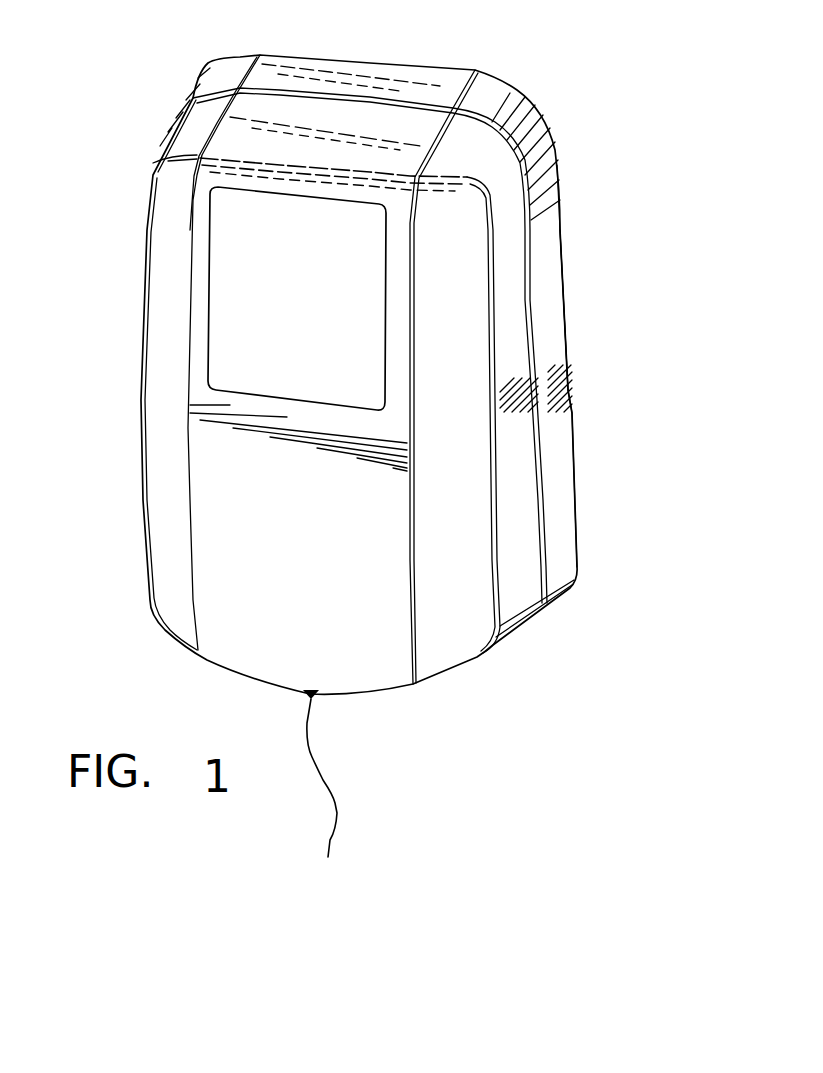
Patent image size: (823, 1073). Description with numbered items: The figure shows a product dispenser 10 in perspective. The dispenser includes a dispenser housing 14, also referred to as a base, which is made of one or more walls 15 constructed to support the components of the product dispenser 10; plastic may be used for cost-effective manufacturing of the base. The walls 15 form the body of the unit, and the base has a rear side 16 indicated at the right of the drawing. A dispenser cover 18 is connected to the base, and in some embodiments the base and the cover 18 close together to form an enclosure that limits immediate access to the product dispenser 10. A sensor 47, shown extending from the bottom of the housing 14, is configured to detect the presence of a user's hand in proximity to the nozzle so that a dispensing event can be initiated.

The product dispenser 10 is at (585, 85).
The dispenser housing 14 is at (548, 257).
The walls 15 is at (553, 343).
The rear side 16 is at (601, 442).
The dispenser cover 18 is at (170, 519).
The sensor 47 is at (324, 798).